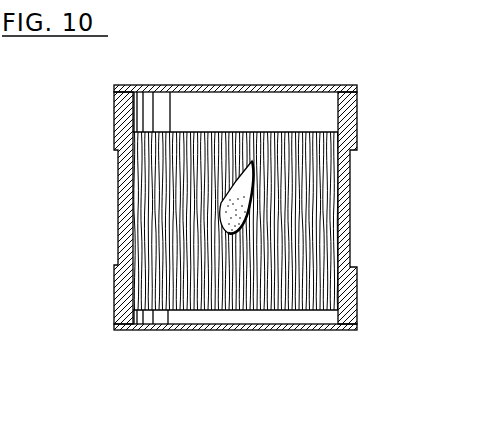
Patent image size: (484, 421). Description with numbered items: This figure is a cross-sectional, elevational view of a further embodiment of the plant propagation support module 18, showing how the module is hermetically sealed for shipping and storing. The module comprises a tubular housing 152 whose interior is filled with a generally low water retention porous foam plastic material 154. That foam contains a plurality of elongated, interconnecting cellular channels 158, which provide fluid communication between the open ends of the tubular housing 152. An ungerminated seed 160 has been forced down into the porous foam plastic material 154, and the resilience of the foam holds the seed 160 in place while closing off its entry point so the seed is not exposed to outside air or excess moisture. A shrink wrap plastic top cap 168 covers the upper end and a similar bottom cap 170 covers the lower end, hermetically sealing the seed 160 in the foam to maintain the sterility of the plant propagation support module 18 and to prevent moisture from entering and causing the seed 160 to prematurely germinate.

The plant propagation support module 18 is at (80, 123).
The tubular housing 152 is at (118, 198).
The porous foam plastic material 154 is at (231, 130).
The elongated, interconnecting cellular channels 158 is at (288, 147).
The ungerminated seed 160 is at (237, 180).
The top cap 168 is at (255, 86).
The bottom cap 170 is at (238, 330).